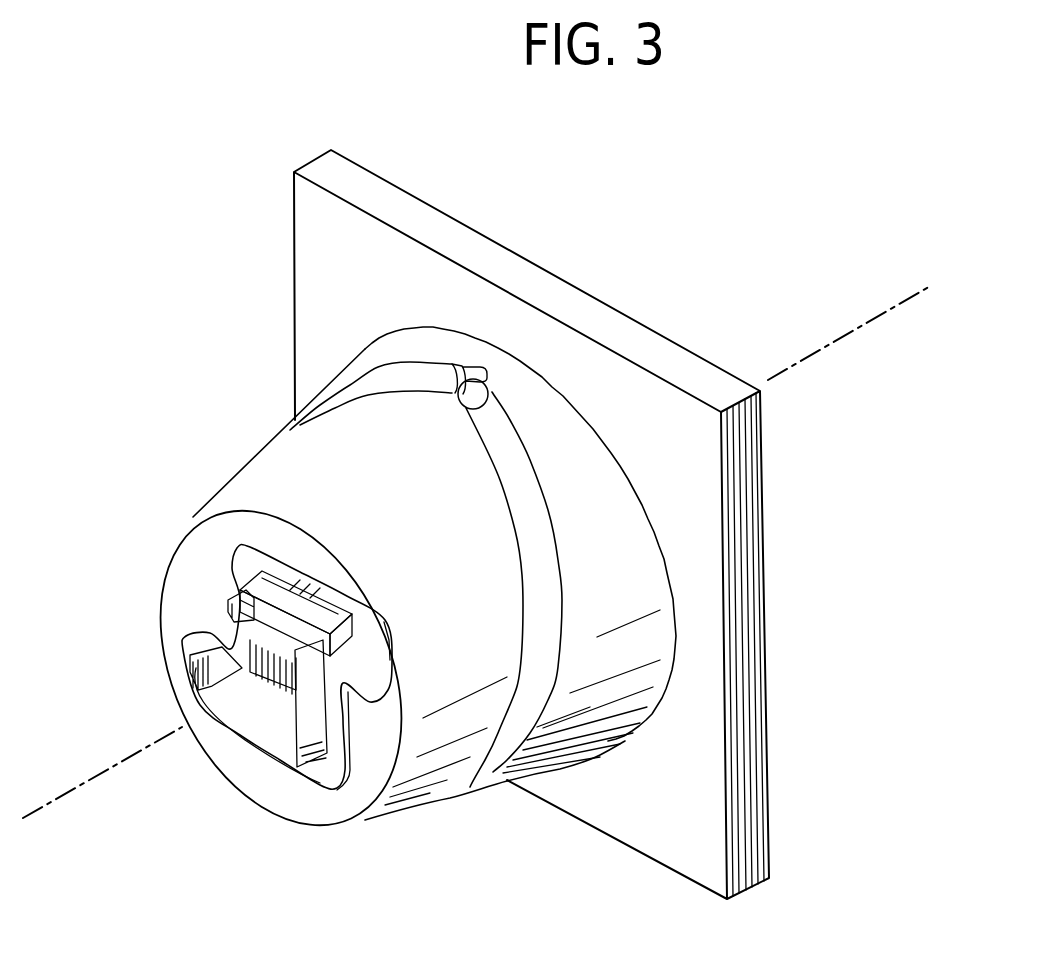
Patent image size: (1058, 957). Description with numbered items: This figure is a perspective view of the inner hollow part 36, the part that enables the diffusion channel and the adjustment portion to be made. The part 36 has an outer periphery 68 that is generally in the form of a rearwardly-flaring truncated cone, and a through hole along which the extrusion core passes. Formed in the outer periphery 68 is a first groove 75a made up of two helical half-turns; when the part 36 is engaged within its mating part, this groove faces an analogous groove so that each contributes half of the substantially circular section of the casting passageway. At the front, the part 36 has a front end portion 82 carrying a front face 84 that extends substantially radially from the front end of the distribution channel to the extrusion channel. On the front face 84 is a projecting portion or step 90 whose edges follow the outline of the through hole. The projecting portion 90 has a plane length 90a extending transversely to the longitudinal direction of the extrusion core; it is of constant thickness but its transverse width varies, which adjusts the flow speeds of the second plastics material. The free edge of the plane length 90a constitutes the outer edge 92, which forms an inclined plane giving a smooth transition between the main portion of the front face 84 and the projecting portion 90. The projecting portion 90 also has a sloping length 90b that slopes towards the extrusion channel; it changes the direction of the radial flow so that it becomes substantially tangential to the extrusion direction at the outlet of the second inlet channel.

The inner hollow part 36 is at (549, 256).
The outer periphery 68 is at (236, 460).
The first groove 75a is at (350, 387).
The front end portion 82 is at (287, 815).
The front face 84 is at (155, 647).
The projecting portion 90 is at (387, 688).
The plane length 90a is at (278, 568).
The sloping length 90b is at (317, 607).
The outer edge 92 is at (228, 553).